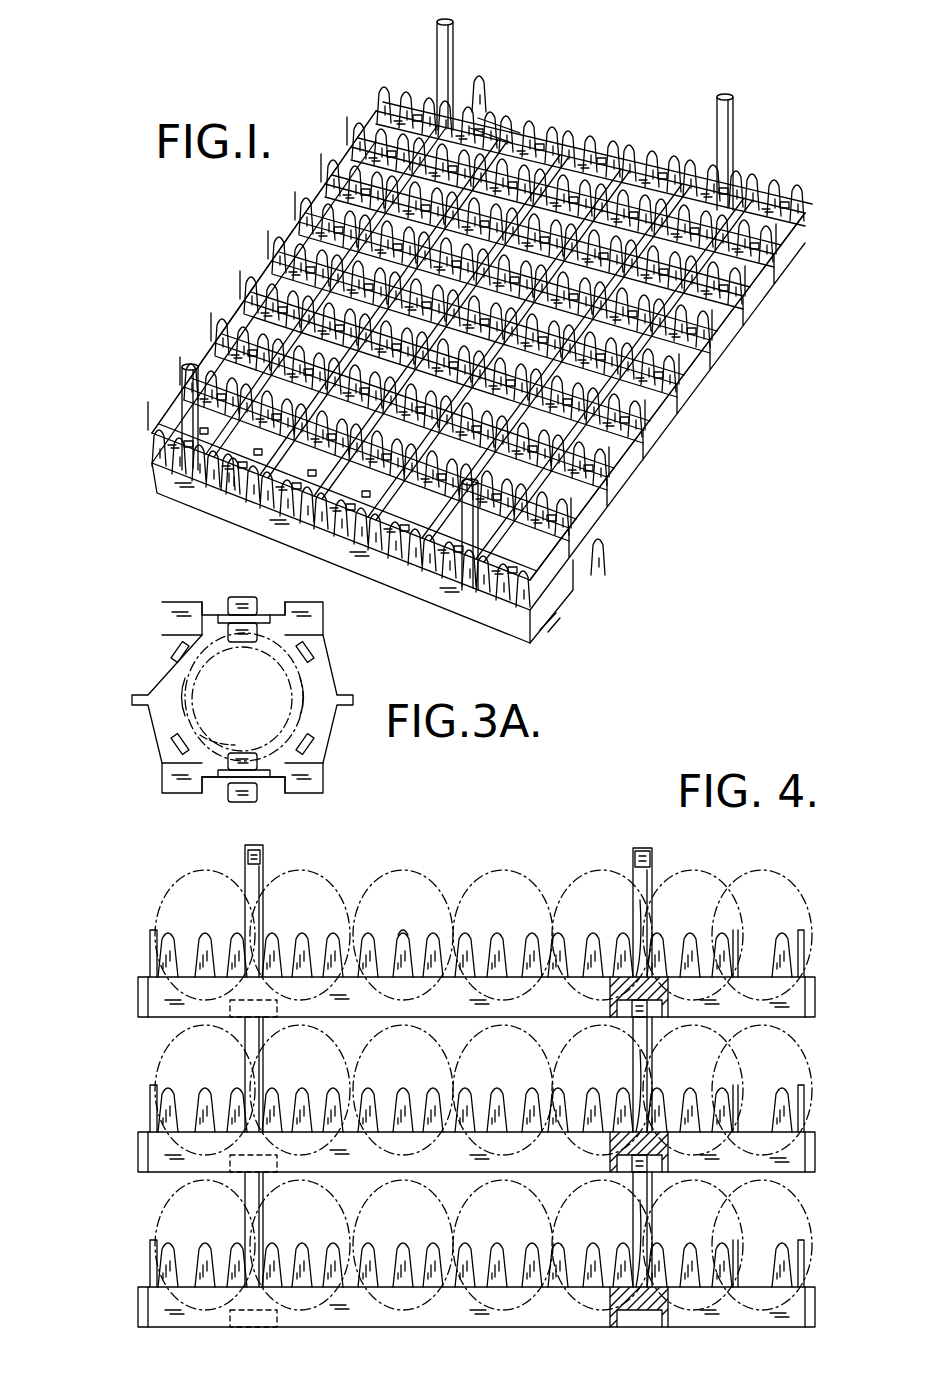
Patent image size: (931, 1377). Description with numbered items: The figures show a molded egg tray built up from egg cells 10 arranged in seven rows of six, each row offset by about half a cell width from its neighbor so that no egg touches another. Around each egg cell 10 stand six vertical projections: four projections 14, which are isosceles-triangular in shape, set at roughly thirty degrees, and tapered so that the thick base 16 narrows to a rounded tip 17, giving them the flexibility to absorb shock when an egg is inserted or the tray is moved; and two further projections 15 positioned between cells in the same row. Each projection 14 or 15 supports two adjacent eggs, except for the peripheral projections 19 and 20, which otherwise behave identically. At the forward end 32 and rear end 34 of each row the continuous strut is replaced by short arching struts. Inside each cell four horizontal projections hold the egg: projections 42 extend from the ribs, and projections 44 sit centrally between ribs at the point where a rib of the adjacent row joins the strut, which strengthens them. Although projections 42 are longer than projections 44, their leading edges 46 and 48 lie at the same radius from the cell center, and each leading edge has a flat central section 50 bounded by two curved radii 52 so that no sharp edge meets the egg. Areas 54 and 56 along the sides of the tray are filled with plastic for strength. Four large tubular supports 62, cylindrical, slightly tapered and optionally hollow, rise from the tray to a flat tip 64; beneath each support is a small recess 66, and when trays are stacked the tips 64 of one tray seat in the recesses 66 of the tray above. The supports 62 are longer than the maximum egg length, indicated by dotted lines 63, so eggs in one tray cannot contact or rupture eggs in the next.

In FIG. 1, the egg cell 10 is at (385, 150).
In FIG. 3A, the egg cell 10 is at (196, 646).
In FIG. 1, the vertical projection 14 is at (540, 345).
In FIG. 3A, the vertical projection 14 is at (176, 748).
In FIG. 4, the vertical projection 14 is at (414, 917).
In FIG. 1, the vertical projection 15 is at (640, 185).
In FIG. 3A, the vertical projection 15 is at (262, 785).
In FIG. 4, the vertical projection 15 is at (345, 945).
In FIG. 1, the base 16 is at (587, 598).
In FIG. 4, the base 16 is at (410, 978).
In FIG. 1, the tip 17 is at (612, 558).
In FIG. 4, the tip 17 is at (401, 938).
In FIG. 1, the projection 19 is at (298, 205).
In FIG. 4, the projection 19 is at (149, 949).
In FIG. 1, the projection 20 is at (485, 104).
In FIG. 4, the projection 20 is at (215, 945).
In FIG. 1, the forward end 32 is at (222, 258).
In FIG. 1, the rear end 34 is at (743, 418).
In FIG. 1, the horizontal projection 42 is at (586, 388).
In FIG. 3A, the horizontal projection 42 is at (254, 625).
In FIG. 3A, the horizontal projection 44 is at (310, 699).
In FIG. 3A, the leading edge 46 is at (244, 696).
In FIG. 3A, the leading edge 48 is at (200, 690).
In FIG. 3A, the flat central section 50 is at (242, 699).
In FIG. 1, the curved radius 52 is at (496, 382).
In FIG. 3A, the curved radius 52 is at (217, 637).
In FIG. 1, the area 54 is at (505, 130).
In FIG. 1, the area 56 is at (338, 548).
In FIG. 1, the tubular support 62 is at (430, 39).
In FIG. 4, the tubular support 62 is at (274, 857).
In FIG. 3A, the dotted lines 63 is at (217, 732).
In FIG. 4, the dotted lines 63 is at (765, 878).
In FIG. 1, the flat tip 64 is at (727, 96).
In FIG. 4, the flat tip 64 is at (246, 856).
In FIG. 4, the recess 66 is at (625, 1020).